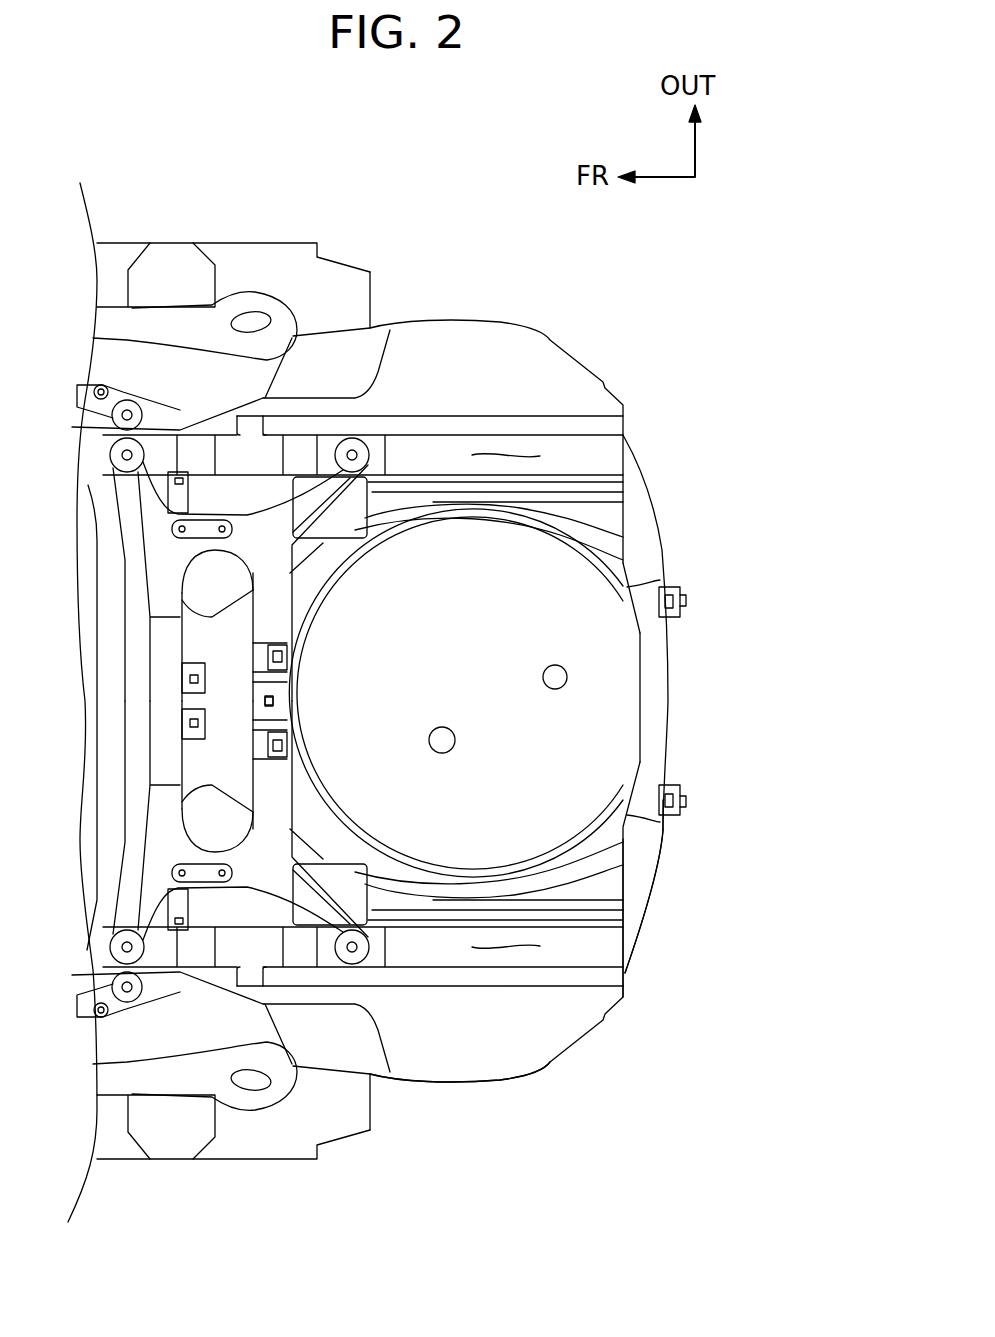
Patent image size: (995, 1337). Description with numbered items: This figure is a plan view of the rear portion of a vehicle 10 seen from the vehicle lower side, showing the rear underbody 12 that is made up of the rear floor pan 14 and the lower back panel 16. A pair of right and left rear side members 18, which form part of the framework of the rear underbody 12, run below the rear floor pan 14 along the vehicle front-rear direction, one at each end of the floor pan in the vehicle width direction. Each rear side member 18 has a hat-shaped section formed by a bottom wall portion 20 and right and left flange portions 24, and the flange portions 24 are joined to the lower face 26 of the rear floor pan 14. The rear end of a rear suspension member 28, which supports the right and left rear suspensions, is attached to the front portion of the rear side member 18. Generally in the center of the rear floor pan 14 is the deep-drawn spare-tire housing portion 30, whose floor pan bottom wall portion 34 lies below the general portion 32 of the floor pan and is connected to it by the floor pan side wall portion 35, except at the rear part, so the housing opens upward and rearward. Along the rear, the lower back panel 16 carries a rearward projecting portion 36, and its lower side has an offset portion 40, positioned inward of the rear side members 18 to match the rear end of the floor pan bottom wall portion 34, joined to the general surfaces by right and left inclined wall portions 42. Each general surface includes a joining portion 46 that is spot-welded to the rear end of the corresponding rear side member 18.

The vehicle 10 is at (275, 205).
The rear underbody 12 is at (548, 1080).
The rear floor pan 14 is at (568, 350).
The lower back panel 16 is at (667, 872).
The rear side member 18 is at (407, 413).
The bottom wall portion 20 is at (363, 701).
The flange portion 24 is at (457, 424).
The lower face 26 is at (505, 372).
The rear suspension member 28 is at (258, 607).
The spare-tire housing portion 30 is at (645, 712).
The general portion 32 is at (425, 345).
The floor pan bottom wall portion 34 is at (466, 723).
The floor pan side wall portion 35 is at (540, 868).
The projecting portion 36 is at (645, 847).
The offset portion 40 is at (645, 655).
The inclined wall portion 42 is at (660, 580).
The joining portion 46 is at (627, 450).